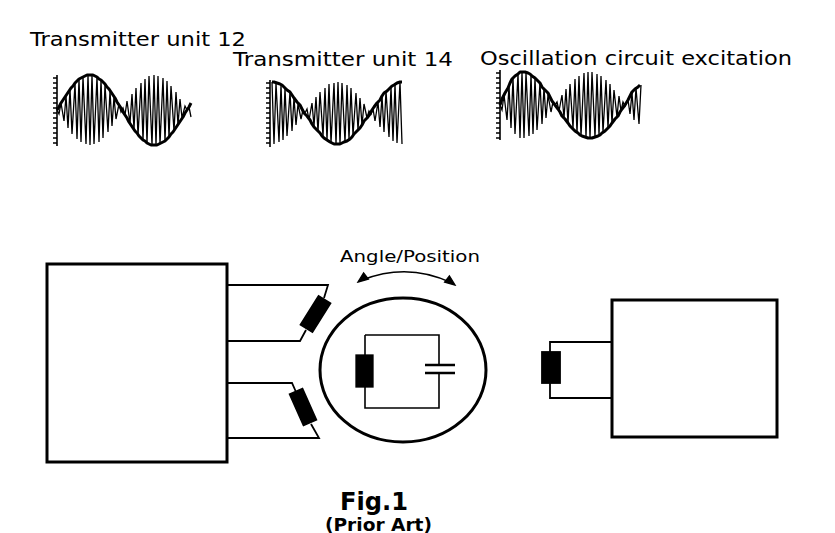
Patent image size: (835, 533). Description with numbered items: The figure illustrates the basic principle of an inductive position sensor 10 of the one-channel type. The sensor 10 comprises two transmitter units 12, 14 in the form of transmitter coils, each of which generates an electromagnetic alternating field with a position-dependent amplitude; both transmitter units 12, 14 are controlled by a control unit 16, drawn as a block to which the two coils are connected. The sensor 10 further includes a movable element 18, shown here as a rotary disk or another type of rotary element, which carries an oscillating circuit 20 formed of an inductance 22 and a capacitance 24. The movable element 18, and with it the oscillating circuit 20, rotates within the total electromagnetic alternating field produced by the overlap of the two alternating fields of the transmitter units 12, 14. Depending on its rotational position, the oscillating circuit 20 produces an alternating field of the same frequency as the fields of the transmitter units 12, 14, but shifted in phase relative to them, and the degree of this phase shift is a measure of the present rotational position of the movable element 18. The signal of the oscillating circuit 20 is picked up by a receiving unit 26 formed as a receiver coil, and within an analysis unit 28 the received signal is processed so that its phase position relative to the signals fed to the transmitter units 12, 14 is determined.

The sensor 10 is at (270, 232).
The transmitter unit 12 is at (280, 313).
The transmitter unit 14 is at (276, 417).
The control unit 16 is at (120, 293).
The movable element 18 is at (445, 325).
The oscillating circuit 20 is at (419, 390).
The inductance 22 is at (356, 368).
The capacitance 24 is at (445, 362).
The receiving unit 26 is at (560, 357).
The analysis unit 28 is at (688, 325).